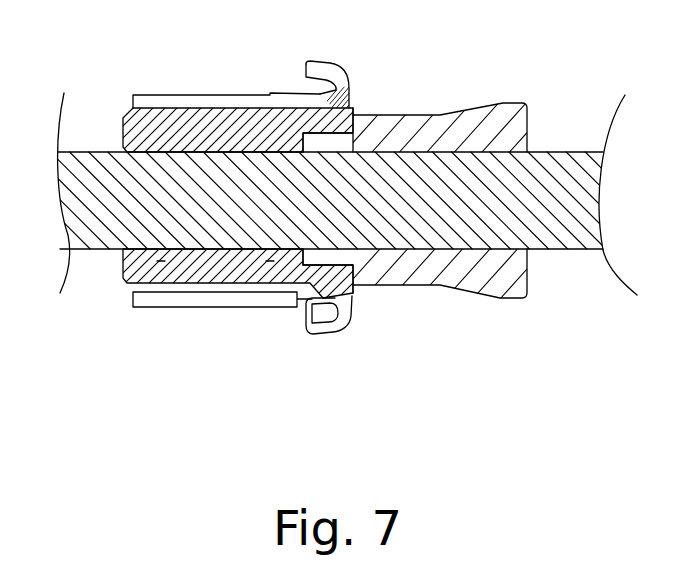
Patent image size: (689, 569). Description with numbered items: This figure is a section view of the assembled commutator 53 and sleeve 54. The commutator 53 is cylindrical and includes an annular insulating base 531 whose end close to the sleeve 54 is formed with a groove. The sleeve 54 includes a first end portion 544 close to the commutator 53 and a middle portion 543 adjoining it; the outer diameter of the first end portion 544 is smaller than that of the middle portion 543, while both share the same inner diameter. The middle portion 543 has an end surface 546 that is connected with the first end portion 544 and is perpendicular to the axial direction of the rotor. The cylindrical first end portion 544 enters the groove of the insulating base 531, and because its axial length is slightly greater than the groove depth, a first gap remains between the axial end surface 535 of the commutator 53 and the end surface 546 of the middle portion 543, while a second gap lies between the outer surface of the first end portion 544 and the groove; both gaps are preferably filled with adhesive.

The commutator 53 is at (230, 97).
The insulating base 531 is at (203, 272).
The axial end surface 535 is at (352, 108).
The sleeve 54 is at (442, 217).
The middle portion 543 is at (398, 135).
The first end portion 544 is at (311, 330).
The end surface 546 is at (360, 285).